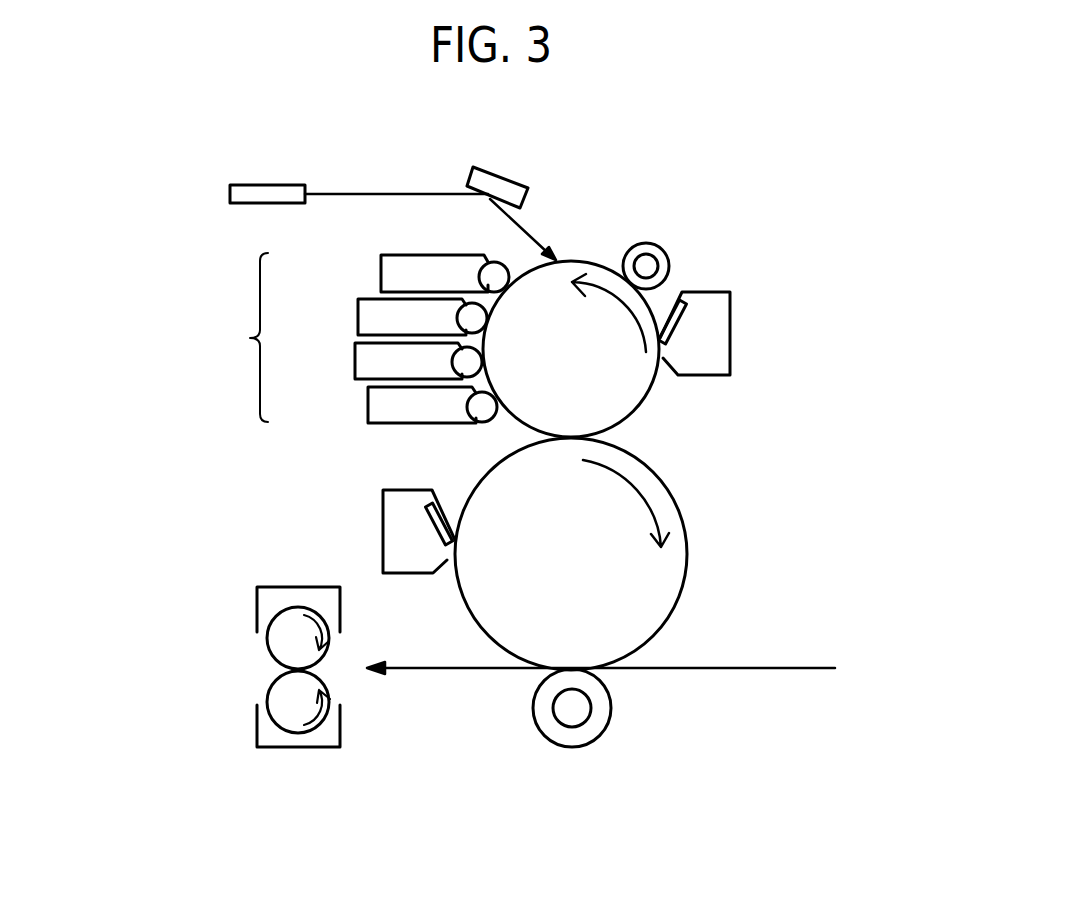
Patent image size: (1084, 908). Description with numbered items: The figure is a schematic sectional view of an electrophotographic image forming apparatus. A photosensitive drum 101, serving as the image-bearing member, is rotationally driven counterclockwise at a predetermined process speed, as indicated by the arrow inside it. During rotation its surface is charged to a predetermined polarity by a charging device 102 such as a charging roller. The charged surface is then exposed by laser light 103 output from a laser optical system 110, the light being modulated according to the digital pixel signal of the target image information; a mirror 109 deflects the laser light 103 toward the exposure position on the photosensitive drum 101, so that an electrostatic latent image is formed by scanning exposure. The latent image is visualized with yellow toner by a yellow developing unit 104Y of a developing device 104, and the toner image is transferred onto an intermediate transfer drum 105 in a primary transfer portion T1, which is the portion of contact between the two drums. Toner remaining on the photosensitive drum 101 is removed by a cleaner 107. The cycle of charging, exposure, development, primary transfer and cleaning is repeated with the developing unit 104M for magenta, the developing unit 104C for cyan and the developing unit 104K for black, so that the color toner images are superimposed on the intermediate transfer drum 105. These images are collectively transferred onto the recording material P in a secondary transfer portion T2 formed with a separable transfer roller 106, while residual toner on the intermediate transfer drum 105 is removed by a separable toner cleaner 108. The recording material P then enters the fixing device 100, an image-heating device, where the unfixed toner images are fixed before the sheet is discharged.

The fixing device 100 is at (257, 612).
The photosensitive drum 101 is at (647, 397).
The charging device 102 is at (650, 244).
The laser light 103 is at (533, 243).
The developing device 104 is at (235, 337).
The yellow developing unit 104Y is at (383, 276).
The magenta developing unit 104M is at (361, 322).
The cyan developing unit 104C is at (358, 365).
The black developing unit 104K is at (371, 410).
The intermediate transfer drum 105 is at (684, 567).
The transfer roller 106 is at (608, 714).
The cleaner 107 is at (733, 332).
The toner cleaner 108 is at (382, 530).
The mirror 109 is at (498, 183).
The laser optical system 110 is at (232, 195).
The primary transfer portion T1 is at (577, 437).
The secondary transfer portion T2 is at (573, 667).
The recording material P is at (819, 667).